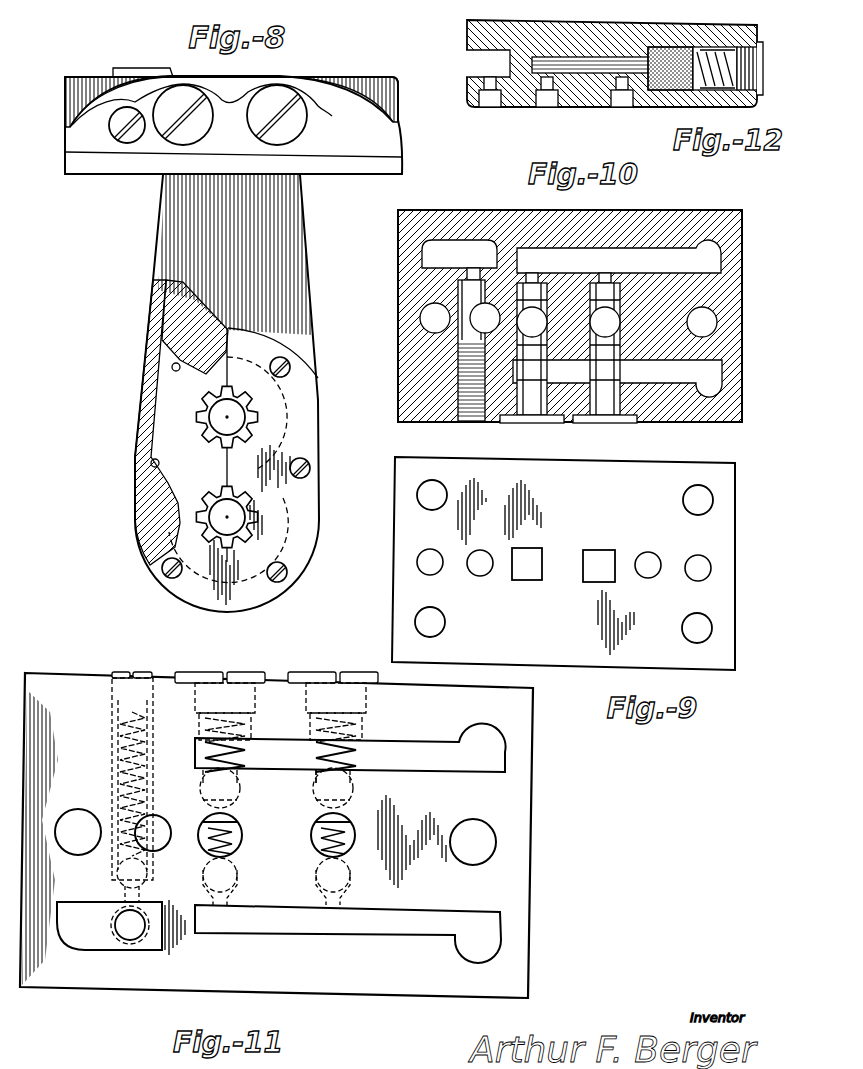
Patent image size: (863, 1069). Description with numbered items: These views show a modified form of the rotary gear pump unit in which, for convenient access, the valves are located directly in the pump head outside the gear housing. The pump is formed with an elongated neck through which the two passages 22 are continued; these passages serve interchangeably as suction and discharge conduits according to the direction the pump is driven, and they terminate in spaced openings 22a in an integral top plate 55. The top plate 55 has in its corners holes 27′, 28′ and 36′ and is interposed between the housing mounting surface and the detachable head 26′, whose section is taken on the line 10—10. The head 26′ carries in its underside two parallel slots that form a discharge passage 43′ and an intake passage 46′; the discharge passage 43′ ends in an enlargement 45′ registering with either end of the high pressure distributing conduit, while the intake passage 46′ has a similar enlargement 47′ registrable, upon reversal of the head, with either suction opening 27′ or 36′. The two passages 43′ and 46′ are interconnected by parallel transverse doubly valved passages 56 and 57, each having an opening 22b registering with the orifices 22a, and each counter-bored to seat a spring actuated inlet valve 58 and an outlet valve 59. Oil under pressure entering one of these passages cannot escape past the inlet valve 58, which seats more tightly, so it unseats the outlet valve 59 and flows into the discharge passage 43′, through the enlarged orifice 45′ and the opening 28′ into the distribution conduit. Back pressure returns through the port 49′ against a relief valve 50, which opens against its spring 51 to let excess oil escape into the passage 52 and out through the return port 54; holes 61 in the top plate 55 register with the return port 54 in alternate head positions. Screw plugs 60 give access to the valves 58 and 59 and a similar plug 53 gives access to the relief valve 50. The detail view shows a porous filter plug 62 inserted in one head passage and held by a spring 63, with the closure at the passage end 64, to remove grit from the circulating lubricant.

In FIG. 8, the bearing 10 is at (453, 150).
In FIG. 8, the passages 22 is at (167, 305).
In FIG. 10, the passages 22 is at (568, 322).
In FIG. 9, the openings in top plate 22a is at (607, 568).
In FIG. 11, the openings in valved passages 22b is at (241, 840).
In FIG. 10, the head 26' is at (570, 306).
In FIG. 11, the head 26' is at (295, 835).
In FIG. 9, the suction opening 27' is at (398, 625).
In FIG. 9, the opening 28' is at (562, 572).
In FIG. 9, the suction opening 36' is at (730, 496).
In FIG. 10, the discharge passage 43' is at (617, 378).
In FIG. 11, the discharge passage 43' is at (350, 747).
In FIG. 10, the enlargement 45' is at (744, 375).
In FIG. 11, the enlargement 45' is at (540, 756).
In FIG. 12, the intake passage 46' is at (591, 99).
In FIG. 10, the intake passage 46' is at (619, 256).
In FIG. 11, the intake passage 46' is at (348, 934).
In FIG. 10, the enlargement 47' is at (748, 243).
In FIG. 11, the enlargement 47' is at (539, 940).
In FIG. 12, the port 49' is at (467, 63).
In FIG. 10, the port 49' is at (422, 325).
In FIG. 11, the port 49' is at (109, 958).
In FIG. 11, the relief valve 50 is at (142, 870).
In FIG. 11, the spring 51 is at (125, 729).
In FIG. 11, the passage 52 is at (113, 768).
In FIG. 11, the plug 53 is at (140, 673).
In FIG. 11, the return port 54 is at (157, 830).
In FIG. 8, the top plate 55 is at (127, 162).
In FIG. 9, the top plate 55 is at (395, 562).
In FIG. 11, the doubly valved passage 56 is at (240, 780).
In FIG. 11, the doubly valved passage 57 is at (355, 800).
In FIG. 11, the inlet valve 58 is at (240, 877).
In FIG. 11, the outlet valve 59 is at (228, 792).
In FIG. 11, the screw plugs 60 is at (235, 673).
In FIG. 9, the holes 61 is at (655, 540).
In FIG. 12, the porous filter plug 62 is at (670, 95).
In FIG. 12, the spring 63 is at (732, 92).
In FIG. 12, the plug 64 is at (765, 56).